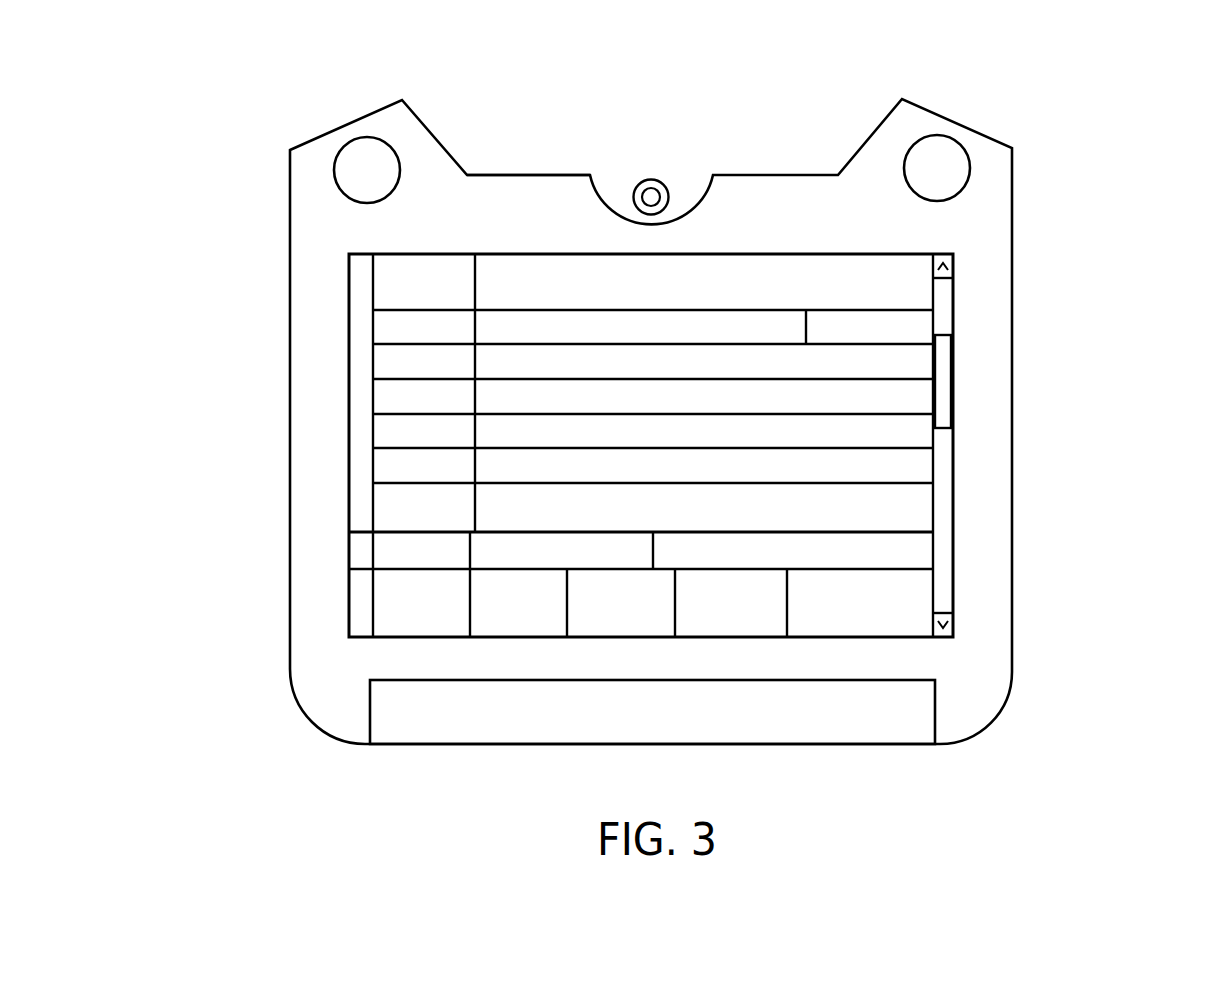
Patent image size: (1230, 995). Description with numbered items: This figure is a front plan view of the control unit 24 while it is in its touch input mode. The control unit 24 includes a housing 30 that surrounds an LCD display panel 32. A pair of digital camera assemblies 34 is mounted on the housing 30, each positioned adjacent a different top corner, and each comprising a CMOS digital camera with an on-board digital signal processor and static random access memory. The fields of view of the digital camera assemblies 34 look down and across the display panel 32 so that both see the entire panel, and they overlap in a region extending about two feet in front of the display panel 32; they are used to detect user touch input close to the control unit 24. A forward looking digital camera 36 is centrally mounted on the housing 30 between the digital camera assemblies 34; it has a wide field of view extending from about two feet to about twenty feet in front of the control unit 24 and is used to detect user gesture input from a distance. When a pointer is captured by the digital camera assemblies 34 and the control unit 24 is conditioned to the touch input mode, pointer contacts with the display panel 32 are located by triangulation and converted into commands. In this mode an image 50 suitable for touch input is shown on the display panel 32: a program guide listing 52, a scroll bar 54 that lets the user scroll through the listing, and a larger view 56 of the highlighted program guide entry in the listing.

The control unit 24 is at (1084, 192).
The housing 30 is at (548, 160).
The LCD display panel 32 is at (913, 592).
The digital camera assemblies 34 is at (384, 164).
The forward looking digital camera 36 is at (653, 194).
The image 50 is at (346, 509).
The program guide listing 52 is at (503, 365).
The scroll bar 54 is at (945, 388).
The larger view 56 is at (388, 640).